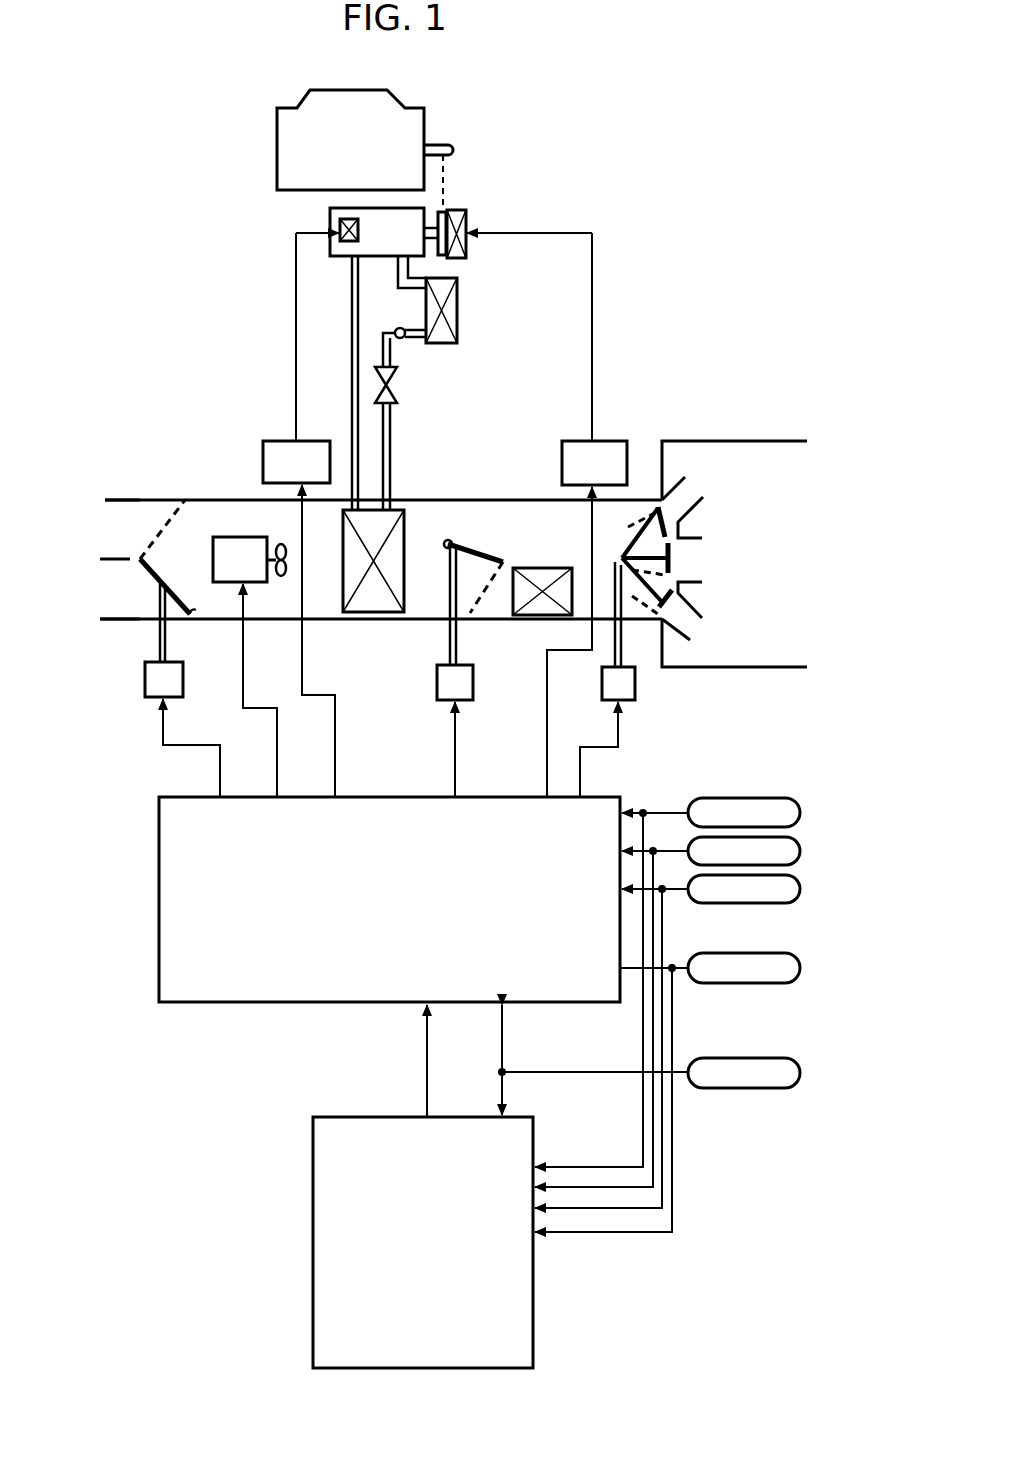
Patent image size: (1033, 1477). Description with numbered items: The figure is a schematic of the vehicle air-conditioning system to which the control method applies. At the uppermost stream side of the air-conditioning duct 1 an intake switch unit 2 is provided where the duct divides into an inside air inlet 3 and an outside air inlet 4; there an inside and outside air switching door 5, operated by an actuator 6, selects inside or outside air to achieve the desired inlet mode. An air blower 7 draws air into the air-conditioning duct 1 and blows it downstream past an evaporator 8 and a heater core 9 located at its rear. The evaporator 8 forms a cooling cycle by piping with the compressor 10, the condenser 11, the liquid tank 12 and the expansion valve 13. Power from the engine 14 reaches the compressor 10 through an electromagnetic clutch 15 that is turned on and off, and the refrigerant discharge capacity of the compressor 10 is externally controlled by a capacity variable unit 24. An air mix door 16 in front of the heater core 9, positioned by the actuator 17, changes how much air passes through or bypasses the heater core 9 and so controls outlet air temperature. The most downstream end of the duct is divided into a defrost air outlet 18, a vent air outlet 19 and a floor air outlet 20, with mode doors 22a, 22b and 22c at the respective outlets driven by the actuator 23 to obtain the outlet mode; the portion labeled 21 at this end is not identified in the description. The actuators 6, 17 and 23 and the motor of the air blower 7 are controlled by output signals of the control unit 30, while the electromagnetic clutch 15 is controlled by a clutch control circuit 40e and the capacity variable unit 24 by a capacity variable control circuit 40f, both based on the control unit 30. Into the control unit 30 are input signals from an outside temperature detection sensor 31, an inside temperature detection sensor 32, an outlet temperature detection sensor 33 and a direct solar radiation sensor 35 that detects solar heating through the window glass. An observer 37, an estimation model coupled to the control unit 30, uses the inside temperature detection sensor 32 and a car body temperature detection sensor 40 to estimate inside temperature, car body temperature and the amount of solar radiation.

The air-conditioning duct 1 is at (222, 500).
The intake switch unit 2 is at (152, 518).
The inside air inlet 3 is at (120, 517).
The outside air inlet 4 is at (112, 595).
The inside and outside air switching door 5 is at (195, 605).
The actuator 6 is at (150, 690).
The air blower 7 is at (258, 585).
The evaporator 8 is at (375, 600).
The heater core 9 is at (535, 610).
The compressor 10 is at (334, 258).
The condenser 11 is at (457, 300).
The liquid tank 12 is at (403, 341).
The expansion valve 13 is at (397, 392).
The engine 14 is at (277, 140).
The electromagnetic clutch 15 is at (462, 222).
The air mix door 16 is at (490, 546).
The actuator 17 is at (473, 688).
The defrost air outlet 18 is at (700, 487).
The vent air outlet 19 is at (692, 545).
The floor air outlet 20 is at (692, 635).
The outlet chamber 21 is at (783, 462).
The mode door 22a is at (672, 527).
The mode door 22b is at (672, 562).
The mode door 22c is at (676, 606).
The actuator 23 is at (635, 688).
The capacity variable unit 24 is at (330, 225).
The control unit 30 is at (158, 860).
The outside temperature detection sensor 31 is at (775, 798).
The inside temperature detection sensor 32 is at (800, 847).
The outlet temperature detection sensor 33 is at (800, 886).
The direct solar radiation sensor 35 is at (790, 955).
The observer 37 is at (313, 1184).
The car body temperature detection sensor 40 is at (788, 1060).
The clutch control circuit 40e is at (565, 443).
The capacity variable control circuit 40f is at (262, 443).